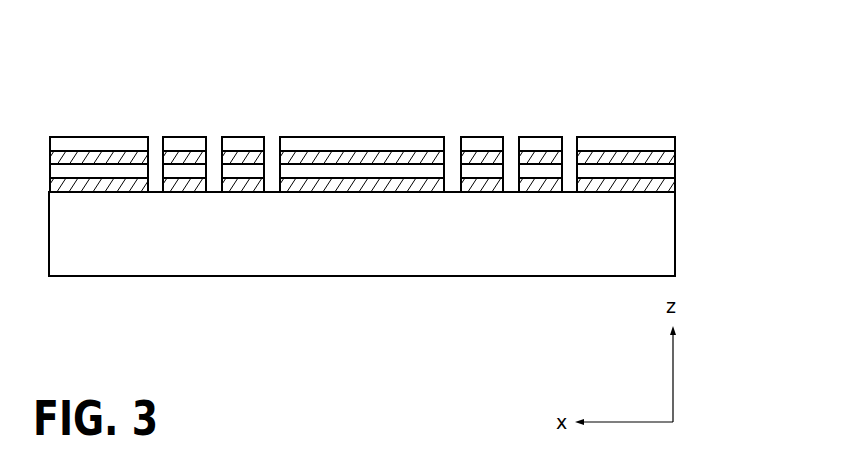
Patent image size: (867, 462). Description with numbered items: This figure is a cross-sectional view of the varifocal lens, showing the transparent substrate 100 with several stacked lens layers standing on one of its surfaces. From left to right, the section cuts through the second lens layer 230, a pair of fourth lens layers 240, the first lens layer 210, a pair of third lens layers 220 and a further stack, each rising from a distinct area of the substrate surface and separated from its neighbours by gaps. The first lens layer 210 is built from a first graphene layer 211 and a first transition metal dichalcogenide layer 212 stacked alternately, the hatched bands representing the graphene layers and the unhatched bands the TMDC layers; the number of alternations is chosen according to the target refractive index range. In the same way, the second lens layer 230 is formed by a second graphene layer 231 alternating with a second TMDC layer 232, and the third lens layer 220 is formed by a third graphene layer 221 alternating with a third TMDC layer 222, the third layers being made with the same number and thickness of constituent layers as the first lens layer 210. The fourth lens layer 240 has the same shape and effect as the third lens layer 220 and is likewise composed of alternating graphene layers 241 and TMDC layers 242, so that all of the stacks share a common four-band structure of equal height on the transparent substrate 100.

The transparent substrate 100 is at (656, 233).
The first lens layer 210 is at (384, 63).
The first graphene layer 211 is at (322, 183).
The first transition metal dichalcogenide (TMDC) layer 212 is at (395, 170).
The third lens layer 220 is at (505, 63).
The third graphene layer 221 is at (477, 185).
The third TMDC layer 222 is at (493, 170).
The second lens layer 230 is at (105, 63).
The second graphene layer 231 is at (71, 182).
The second TMDC layer 232 is at (117, 170).
The fourth lens layer 240 is at (232, 63).
The fourth electrode layers 241 is at (183, 188).
The fourth insulating layers 242 is at (199, 169).